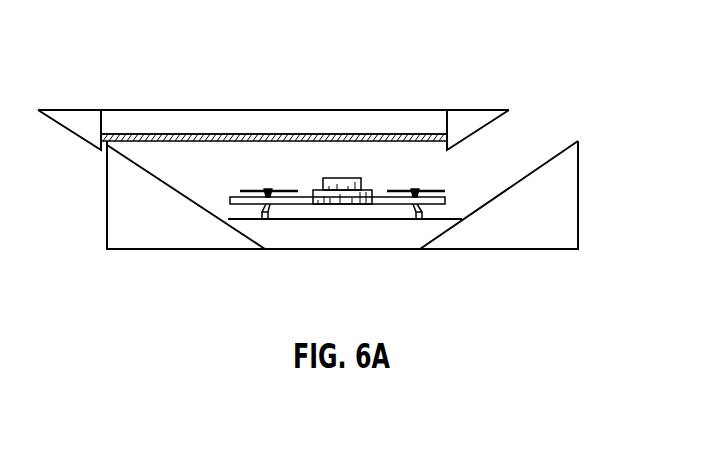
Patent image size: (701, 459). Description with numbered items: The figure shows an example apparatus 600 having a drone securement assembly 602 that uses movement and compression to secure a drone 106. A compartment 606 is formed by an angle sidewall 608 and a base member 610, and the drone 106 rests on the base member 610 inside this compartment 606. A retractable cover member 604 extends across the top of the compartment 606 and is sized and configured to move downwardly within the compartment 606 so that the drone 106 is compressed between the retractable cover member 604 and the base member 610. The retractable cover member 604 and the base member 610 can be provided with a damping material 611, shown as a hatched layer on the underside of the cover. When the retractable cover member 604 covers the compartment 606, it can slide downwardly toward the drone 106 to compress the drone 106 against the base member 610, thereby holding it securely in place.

The apparatus 600 is at (149, 32).
The drone securement assembly 602 is at (501, 197).
The retractable cover member 604 is at (314, 117).
The compartment 606 is at (477, 164).
The angle sidewall 608 is at (168, 185).
The base member 610 is at (347, 235).
The damping material 611 is at (406, 133).
The drone 106 is at (339, 177).